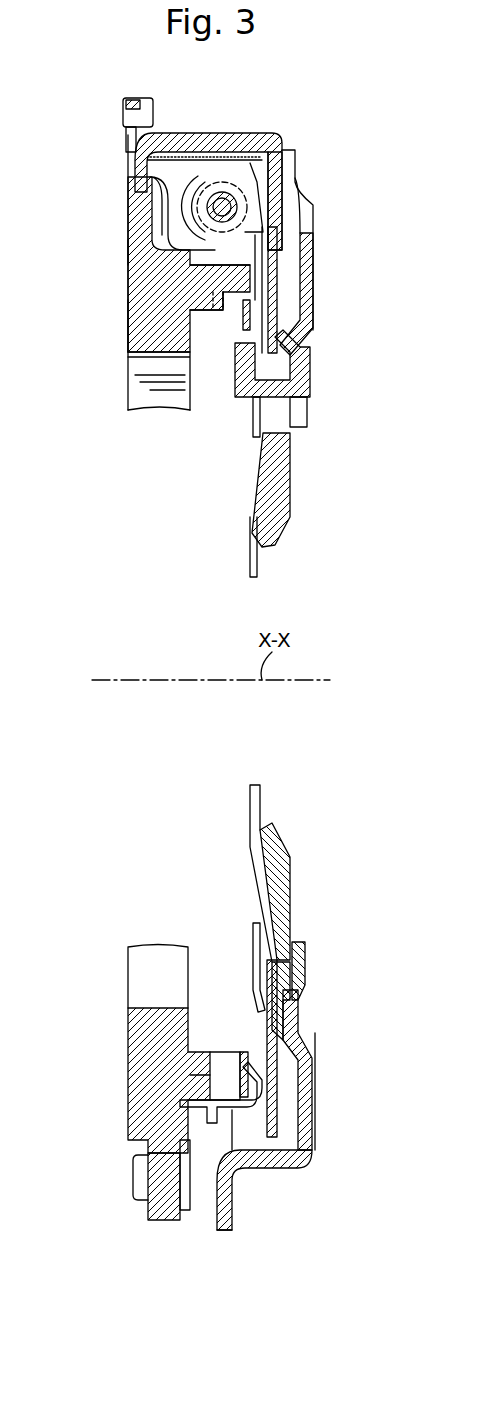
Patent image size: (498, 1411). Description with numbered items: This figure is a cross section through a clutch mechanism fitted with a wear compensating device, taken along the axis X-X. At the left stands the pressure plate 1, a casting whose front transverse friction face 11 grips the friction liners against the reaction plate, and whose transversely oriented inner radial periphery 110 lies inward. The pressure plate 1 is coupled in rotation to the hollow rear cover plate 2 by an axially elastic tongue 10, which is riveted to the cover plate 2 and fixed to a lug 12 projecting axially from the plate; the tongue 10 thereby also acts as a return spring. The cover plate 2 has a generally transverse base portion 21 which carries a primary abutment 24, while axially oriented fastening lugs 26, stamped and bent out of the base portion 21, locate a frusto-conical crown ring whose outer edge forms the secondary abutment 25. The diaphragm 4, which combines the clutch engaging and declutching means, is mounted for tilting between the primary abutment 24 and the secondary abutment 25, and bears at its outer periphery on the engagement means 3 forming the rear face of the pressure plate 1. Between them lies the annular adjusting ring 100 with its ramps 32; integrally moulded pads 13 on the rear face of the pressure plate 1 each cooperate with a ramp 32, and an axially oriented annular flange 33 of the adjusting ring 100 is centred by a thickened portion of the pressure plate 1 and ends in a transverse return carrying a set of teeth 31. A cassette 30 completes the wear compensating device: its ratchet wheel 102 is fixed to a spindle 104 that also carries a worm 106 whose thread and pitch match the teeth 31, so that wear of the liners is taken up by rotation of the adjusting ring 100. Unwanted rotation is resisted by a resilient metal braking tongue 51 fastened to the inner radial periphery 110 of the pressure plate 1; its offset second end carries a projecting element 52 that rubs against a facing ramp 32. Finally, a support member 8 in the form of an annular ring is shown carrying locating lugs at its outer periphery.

The pressure plate 1 is at (118, 220).
The cover plate 2 is at (313, 297).
The engagement means 3 is at (275, 270).
The diaphragm 4 is at (280, 305).
The support member 8 is at (290, 876).
The tongue 10 is at (182, 1212).
The front transverse friction face 11 is at (130, 250).
The lug 12 is at (160, 1220).
The pad 13 is at (220, 268).
The base portion 21 is at (300, 950).
The primary abutment 24 is at (290, 347).
The secondary abutment 25 is at (253, 1000).
The fastening lug 26 is at (285, 400).
The cassette 30 is at (262, 162).
The set of teeth 31 is at (200, 236).
The ramp 32 is at (230, 300).
The annular flange 33 is at (232, 1162).
The braking tongue 51 is at (240, 330).
The projecting element 52 is at (272, 335).
The adjusting ring 100 is at (262, 250).
The ratchet wheel 102 is at (222, 195).
The spindle 104 is at (250, 170).
The worm 106 is at (205, 192).
The inner radial periphery 110 is at (140, 328).